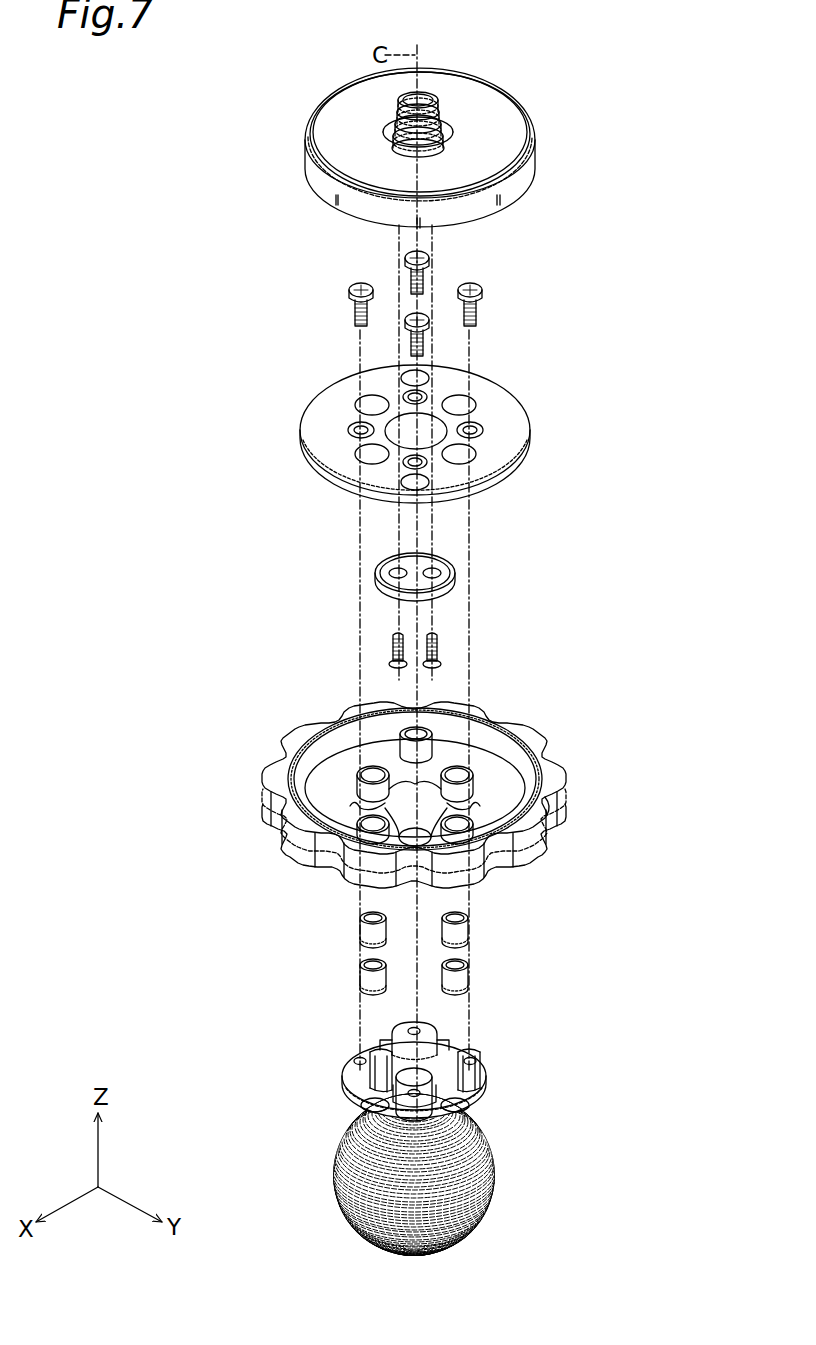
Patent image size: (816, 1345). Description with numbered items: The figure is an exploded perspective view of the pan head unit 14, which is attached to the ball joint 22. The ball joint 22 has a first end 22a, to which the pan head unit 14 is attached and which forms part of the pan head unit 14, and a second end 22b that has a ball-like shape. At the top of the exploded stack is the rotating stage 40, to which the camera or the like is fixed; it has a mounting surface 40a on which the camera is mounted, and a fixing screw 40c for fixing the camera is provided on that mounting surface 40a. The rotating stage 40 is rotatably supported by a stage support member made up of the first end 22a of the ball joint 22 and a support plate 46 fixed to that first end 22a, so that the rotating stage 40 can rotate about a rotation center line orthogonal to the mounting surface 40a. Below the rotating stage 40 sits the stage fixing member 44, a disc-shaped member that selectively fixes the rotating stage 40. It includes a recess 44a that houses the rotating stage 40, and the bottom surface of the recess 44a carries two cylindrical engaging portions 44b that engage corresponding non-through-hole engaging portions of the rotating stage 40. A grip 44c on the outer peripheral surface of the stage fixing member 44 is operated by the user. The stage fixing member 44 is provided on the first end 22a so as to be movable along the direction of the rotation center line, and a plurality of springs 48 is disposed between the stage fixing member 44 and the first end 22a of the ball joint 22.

The pan head unit 14 is at (649, 569).
The ball joint 22 is at (411, 1175).
The first end 22a is at (530, 1060).
The second end (ball portion) 22b is at (482, 1216).
The rotating stage 40 is at (390, 143).
The mounting surface 40a is at (328, 120).
The fixing screw 40c is at (443, 108).
The stage fixing member 44 is at (414, 777).
The recess 44a is at (345, 745).
The cylindrical engaging portions 44b is at (430, 733).
The grip 44c is at (545, 762).
The support plate 46 is at (517, 418).
The springs 48 is at (366, 975).